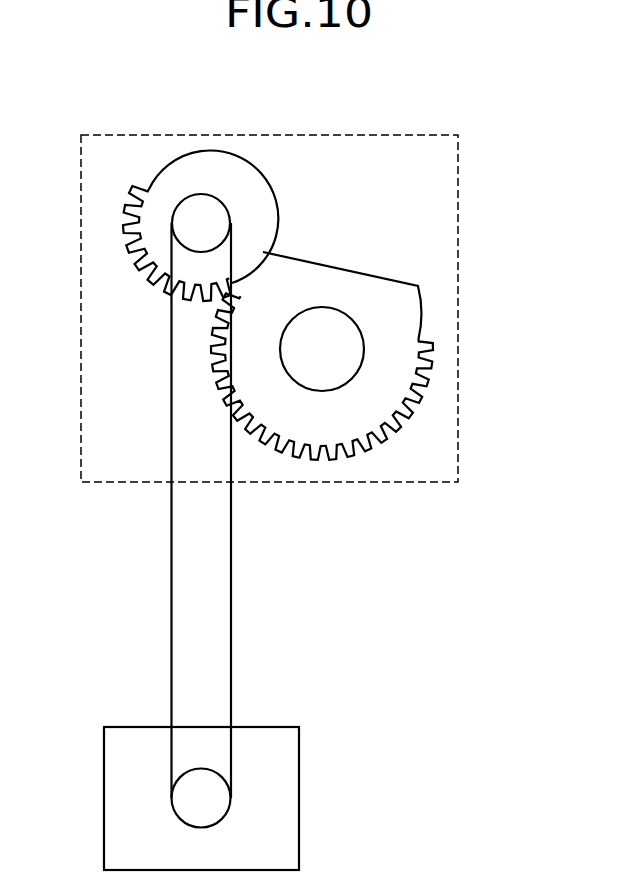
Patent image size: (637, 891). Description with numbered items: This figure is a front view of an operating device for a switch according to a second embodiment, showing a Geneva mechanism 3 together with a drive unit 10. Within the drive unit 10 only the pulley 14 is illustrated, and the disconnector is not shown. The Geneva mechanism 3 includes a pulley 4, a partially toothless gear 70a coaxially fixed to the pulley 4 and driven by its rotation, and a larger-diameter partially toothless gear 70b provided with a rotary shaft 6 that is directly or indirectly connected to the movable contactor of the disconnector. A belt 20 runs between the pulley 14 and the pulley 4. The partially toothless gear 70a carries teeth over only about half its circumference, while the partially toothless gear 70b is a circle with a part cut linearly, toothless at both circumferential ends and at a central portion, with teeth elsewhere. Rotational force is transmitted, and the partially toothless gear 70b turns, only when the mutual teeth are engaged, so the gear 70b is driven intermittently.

The Geneva mechanism 3 is at (405, 134).
The pulley 4 is at (202, 194).
The rotary shaft 6 is at (330, 307).
The drive unit 10 is at (299, 752).
The pulley 14 is at (231, 797).
The belt 20 is at (232, 619).
The partially toothless gear 70a is at (256, 184).
The partially toothless gear 70b is at (393, 277).